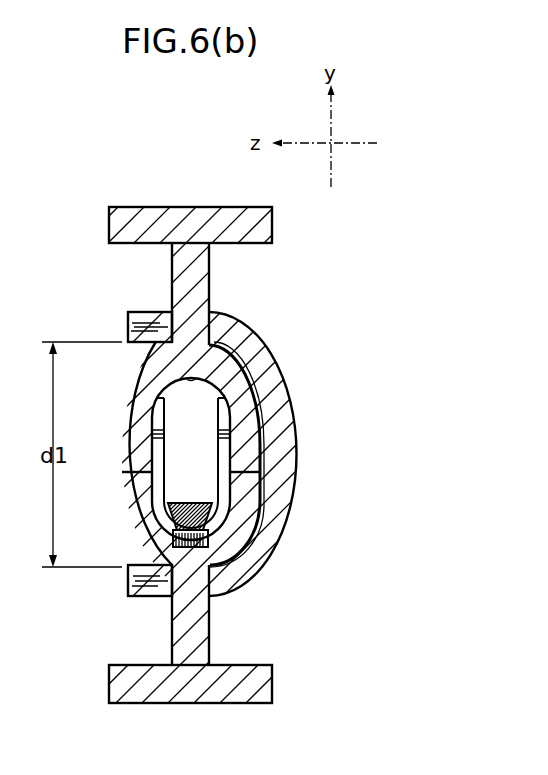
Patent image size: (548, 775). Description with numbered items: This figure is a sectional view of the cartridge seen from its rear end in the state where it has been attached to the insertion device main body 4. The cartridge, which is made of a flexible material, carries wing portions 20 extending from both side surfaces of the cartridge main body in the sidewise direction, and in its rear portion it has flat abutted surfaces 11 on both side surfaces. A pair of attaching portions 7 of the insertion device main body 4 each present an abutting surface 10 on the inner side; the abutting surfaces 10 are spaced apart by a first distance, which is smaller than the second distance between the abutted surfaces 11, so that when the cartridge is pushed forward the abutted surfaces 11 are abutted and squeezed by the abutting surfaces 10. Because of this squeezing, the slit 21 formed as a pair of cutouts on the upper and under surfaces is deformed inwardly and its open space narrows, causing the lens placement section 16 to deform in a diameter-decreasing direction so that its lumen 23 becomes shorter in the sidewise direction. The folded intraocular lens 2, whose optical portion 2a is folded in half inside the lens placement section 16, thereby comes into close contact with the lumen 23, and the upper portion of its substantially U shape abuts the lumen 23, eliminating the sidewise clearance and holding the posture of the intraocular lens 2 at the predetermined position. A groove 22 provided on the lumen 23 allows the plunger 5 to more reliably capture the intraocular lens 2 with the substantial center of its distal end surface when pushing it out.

The intraocular lens 2 is at (233, 413).
The optical portion 2a is at (232, 449).
The insertion device main body 4 is at (289, 381).
The plunger 5 is at (212, 506).
The attaching portion 7 is at (133, 318).
The abutting surface 10 is at (138, 346).
The abutted surface 11 is at (152, 328).
The lens placement section 16 is at (219, 423).
The wing portion 20 is at (172, 266).
The slit 21 is at (260, 468).
The groove 22 is at (209, 541).
The lumen 23 is at (188, 402).